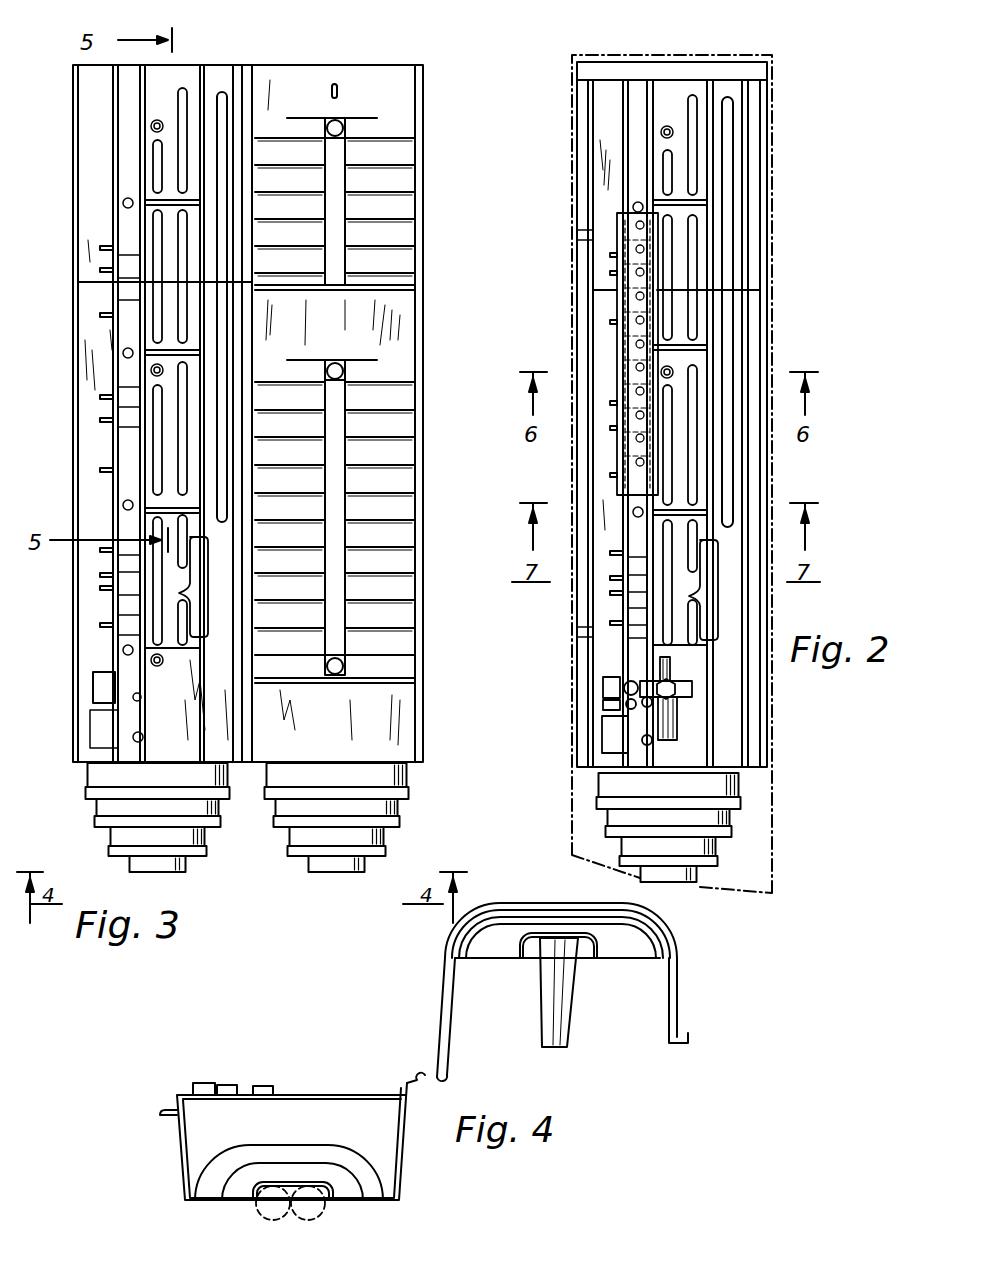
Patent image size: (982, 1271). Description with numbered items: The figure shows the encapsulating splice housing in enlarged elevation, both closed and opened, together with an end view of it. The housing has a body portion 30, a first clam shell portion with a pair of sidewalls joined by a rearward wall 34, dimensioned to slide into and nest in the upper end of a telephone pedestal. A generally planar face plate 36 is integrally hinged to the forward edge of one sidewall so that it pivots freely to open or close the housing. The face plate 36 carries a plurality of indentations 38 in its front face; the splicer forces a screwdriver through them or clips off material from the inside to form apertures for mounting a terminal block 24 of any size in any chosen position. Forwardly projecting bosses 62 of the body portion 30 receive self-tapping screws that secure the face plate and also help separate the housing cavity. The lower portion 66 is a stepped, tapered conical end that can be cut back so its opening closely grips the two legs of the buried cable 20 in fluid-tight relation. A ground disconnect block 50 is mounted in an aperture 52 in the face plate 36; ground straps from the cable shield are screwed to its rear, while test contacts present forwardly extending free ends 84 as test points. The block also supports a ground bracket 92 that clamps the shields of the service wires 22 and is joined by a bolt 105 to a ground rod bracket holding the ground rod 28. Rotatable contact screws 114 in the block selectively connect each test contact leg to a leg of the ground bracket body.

In FIG. 4, the buried cable 20 is at (322, 1213).
In FIG. 2, the service wires 22 is at (678, 740).
In FIG. 2, the terminal block 24 is at (620, 260).
In FIG. 2, the ground rod 28 is at (628, 733).
In FIG. 3, the body portion 30 is at (380, 132).
In FIG. 4, the body portion 30 is at (447, 942).
In FIG. 4, the rearward wall 34 is at (560, 940).
In FIG. 3, the face plate 36 is at (95, 352).
In FIG. 2, the face plate 36 is at (718, 125).
In FIG. 4, the face plate 36 is at (343, 1107).
In FIG. 3, the indentations 38 is at (128, 240).
In FIG. 2, the indentations 38 is at (628, 193).
In FIG. 2, the ground disconnect block 50 is at (603, 680).
In FIG. 3, the aperture 52 is at (93, 684).
In FIG. 4, the bosses 62 is at (560, 1005).
In FIG. 3, the lower portion 66 is at (115, 807).
In FIG. 2, the lower portion 66 is at (683, 845).
In FIG. 2, the forwardly extending free ends 84 is at (624, 701).
In FIG. 2, the ground bracket 92 is at (688, 681).
In FIG. 2, the bolt 105 is at (655, 706).
In FIG. 2, the contact screws 114 is at (628, 681).